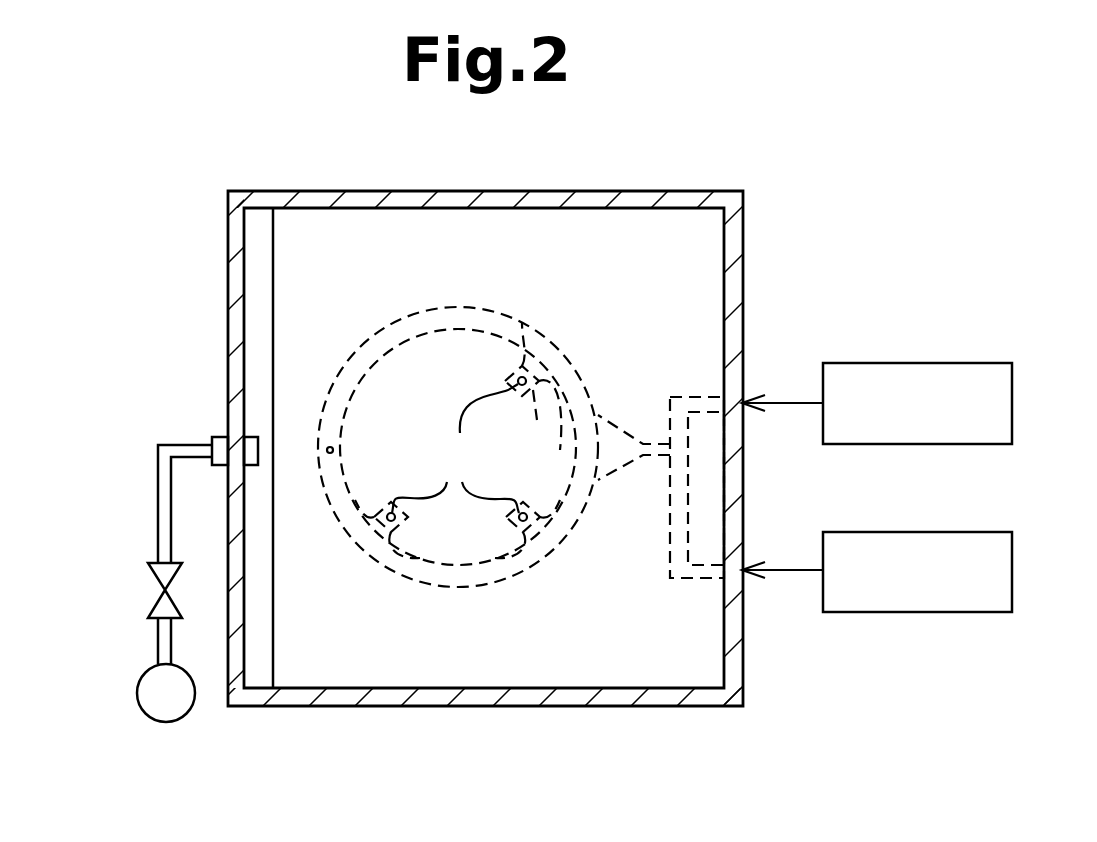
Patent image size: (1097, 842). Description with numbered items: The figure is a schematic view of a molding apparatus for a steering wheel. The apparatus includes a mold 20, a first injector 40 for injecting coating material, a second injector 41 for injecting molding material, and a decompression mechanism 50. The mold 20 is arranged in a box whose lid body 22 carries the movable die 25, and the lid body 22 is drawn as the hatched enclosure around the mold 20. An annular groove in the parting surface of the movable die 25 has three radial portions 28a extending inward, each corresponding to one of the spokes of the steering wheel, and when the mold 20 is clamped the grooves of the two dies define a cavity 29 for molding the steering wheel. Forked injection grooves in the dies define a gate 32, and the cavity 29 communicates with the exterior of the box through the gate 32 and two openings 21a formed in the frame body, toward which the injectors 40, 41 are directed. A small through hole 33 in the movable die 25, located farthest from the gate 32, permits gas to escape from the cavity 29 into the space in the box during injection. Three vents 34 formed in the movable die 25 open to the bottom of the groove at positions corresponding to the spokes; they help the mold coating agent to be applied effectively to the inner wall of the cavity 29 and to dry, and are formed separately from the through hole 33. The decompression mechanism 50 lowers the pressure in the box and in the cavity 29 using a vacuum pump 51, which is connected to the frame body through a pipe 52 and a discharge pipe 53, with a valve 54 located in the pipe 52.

The mold 20 is at (501, 472).
The openings 21a is at (713, 582).
The lid body 22 is at (612, 706).
The movable die 25 is at (712, 247).
The radial portions 28a is at (528, 502).
The cavity 29 is at (522, 325).
The gate 32 is at (618, 487).
The through hole 33 is at (329, 450).
The vents 34 is at (455, 448).
The first injector 40 is at (1012, 571).
The second injector 41 is at (1012, 402).
The decompression mechanism 50 is at (159, 503).
The vacuum pump 51 is at (137, 683).
The pipe 52 is at (158, 473).
The discharge pipe 53 is at (222, 437).
The valve 54 is at (150, 578).